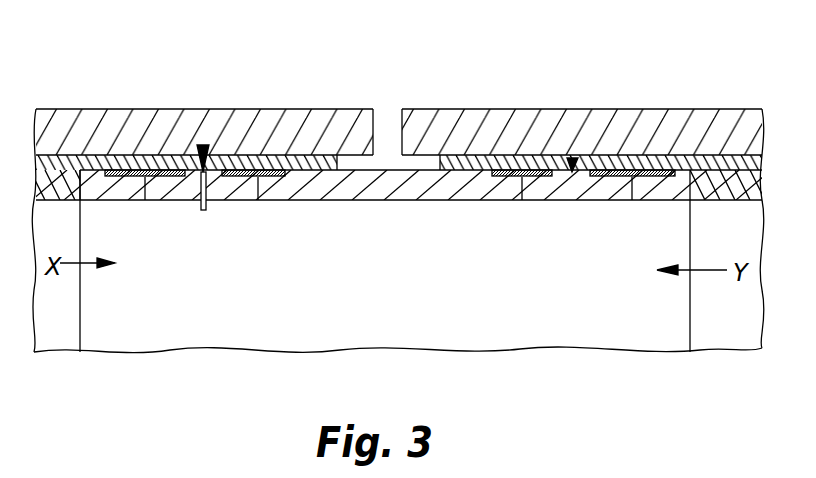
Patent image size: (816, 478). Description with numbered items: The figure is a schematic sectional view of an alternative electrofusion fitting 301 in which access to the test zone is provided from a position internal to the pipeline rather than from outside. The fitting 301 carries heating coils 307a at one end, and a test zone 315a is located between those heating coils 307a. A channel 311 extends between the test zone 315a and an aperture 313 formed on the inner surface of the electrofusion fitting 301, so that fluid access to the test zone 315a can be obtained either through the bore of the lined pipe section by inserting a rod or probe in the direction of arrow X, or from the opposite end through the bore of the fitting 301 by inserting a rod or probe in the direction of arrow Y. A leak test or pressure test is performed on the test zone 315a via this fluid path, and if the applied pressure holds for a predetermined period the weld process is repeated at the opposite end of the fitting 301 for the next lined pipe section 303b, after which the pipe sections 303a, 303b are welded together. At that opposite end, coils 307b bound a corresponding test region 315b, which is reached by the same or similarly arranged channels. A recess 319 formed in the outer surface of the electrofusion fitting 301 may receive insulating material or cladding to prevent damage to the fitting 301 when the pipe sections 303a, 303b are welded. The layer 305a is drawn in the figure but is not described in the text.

The electrofusion fitting 301 is at (415, 202).
The lined pipe section 303a is at (93, 125).
The lined pipe section 303b is at (647, 125).
The dielectric layer 305a is at (265, 162).
The heating coils 307a is at (145, 202).
The coils 307b is at (630, 202).
The channel 311 is at (187, 202).
The aperture 313 is at (205, 212).
The test zone 315a is at (201, 146).
The test region 315b is at (572, 160).
The recess 319 is at (353, 202).